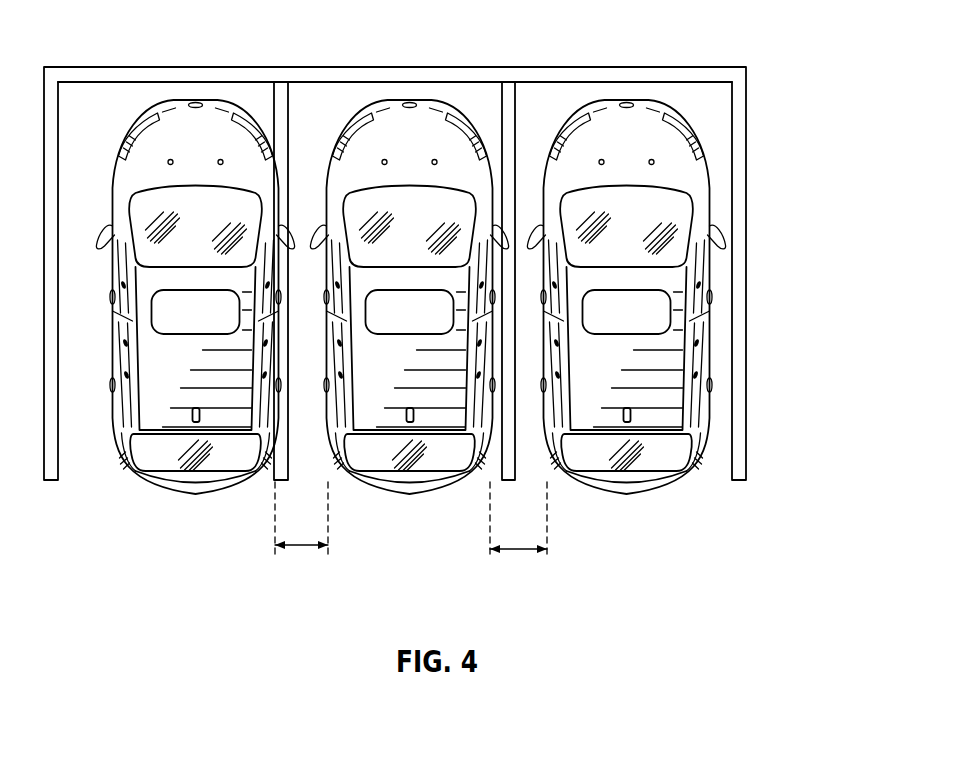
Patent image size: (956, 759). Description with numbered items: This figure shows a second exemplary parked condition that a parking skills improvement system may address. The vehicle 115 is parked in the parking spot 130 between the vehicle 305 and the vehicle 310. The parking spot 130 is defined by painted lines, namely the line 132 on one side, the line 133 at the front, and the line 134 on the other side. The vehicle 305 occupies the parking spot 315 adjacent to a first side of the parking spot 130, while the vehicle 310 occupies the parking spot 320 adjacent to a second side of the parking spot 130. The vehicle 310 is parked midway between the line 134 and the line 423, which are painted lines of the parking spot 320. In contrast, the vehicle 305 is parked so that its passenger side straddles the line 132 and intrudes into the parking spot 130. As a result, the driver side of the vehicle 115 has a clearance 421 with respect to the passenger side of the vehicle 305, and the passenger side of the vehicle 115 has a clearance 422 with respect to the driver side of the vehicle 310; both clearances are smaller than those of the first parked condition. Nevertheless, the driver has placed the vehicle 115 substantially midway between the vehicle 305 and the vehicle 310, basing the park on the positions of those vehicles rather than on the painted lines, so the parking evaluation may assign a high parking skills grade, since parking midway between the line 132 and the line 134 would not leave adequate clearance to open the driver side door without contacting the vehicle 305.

The vehicle 115 is at (405, 493).
The parking spot 130 is at (400, 591).
The line 132 is at (283, 113).
The line 133 is at (398, 70).
The line 134 is at (507, 123).
The vehicle 305 is at (172, 493).
The vehicle 310 is at (643, 493).
The parking spot 315 is at (148, 591).
The parking spot 320 is at (640, 591).
The clearance 421 is at (300, 546).
The clearance 422 is at (517, 556).
The line 423 is at (746, 150).